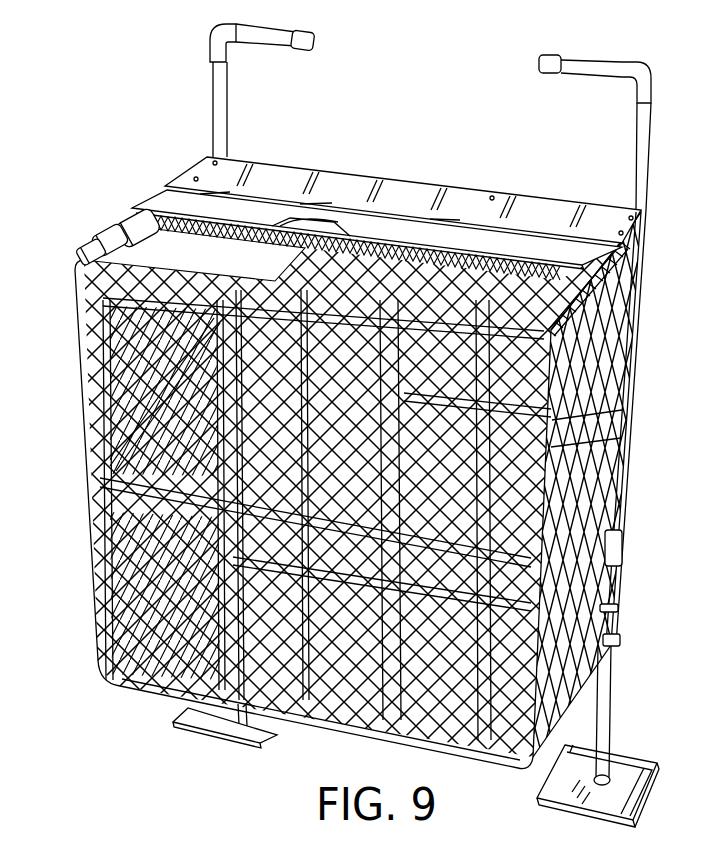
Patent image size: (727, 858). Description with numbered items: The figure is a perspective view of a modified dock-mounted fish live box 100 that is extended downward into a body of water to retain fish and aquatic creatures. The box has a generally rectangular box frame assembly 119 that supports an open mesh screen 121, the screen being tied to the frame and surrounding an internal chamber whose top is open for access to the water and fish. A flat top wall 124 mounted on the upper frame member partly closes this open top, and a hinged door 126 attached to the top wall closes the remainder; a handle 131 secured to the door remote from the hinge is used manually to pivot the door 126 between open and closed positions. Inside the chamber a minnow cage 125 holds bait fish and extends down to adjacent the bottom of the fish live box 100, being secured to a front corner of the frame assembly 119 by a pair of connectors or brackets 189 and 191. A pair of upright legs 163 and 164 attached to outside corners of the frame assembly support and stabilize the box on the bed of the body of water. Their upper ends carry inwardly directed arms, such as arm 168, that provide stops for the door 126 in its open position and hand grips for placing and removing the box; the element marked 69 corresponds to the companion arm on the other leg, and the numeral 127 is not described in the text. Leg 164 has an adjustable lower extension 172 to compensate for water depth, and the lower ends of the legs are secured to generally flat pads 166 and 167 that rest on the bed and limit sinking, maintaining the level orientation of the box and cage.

The fish live box 100 is at (147, 96).
The box frame assembly 119 is at (84, 552).
The open mesh screen 121 is at (87, 403).
The top wall 124 is at (424, 193).
The door 126 is at (163, 203).
The lid slat 127 is at (343, 180).
The handle 131 is at (298, 224).
The bracket 191 is at (128, 217).
The minnow cage 125 is at (112, 237).
The bracket 189 is at (83, 249).
The upright leg 163 is at (213, 108).
The inwardly directed arm 168 is at (281, 2).
The handle grip 69 is at (584, 64).
The upright leg 164 is at (646, 173).
The lower extension 172 is at (611, 697).
The pad 167 is at (622, 773).
The pad 166 is at (202, 718).